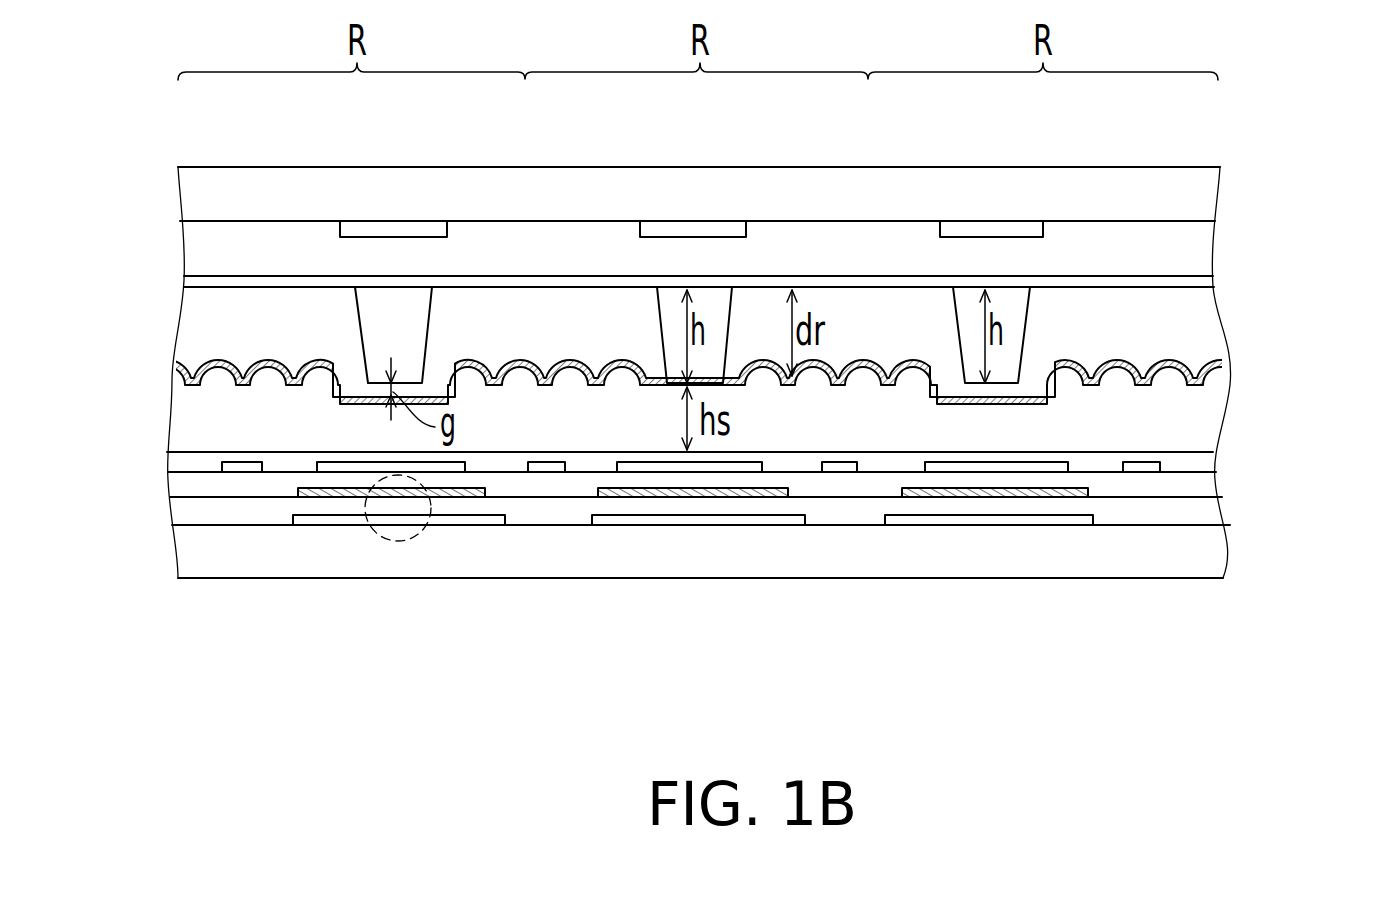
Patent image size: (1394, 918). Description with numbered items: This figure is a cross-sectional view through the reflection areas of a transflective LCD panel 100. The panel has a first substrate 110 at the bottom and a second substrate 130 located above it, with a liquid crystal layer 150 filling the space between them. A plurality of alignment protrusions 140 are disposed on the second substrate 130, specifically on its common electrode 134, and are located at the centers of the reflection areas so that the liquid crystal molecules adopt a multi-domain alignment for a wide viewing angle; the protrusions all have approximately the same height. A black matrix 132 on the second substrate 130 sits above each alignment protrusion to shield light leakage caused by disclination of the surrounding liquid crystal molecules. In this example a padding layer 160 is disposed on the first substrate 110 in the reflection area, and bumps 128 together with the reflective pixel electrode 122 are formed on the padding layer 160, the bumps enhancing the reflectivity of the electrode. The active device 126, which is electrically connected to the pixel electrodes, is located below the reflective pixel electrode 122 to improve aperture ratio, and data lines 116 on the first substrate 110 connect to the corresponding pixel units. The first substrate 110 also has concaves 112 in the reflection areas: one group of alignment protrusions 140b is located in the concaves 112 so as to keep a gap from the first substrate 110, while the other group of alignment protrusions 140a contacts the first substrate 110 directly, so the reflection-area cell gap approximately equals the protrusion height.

The LCD panel 100 is at (1279, 740).
The first substrate 110 is at (1166, 600).
The concaves 112 is at (434, 379).
The data lines 116 is at (552, 474).
The reflective pixel electrode 122 is at (593, 388).
The active device 126 is at (400, 542).
The bumps 128 is at (520, 390).
The second substrate 130 is at (1218, 137).
The black matrix 132 is at (390, 230).
The common electrode 134 is at (1212, 282).
The alignment protrusions 140 is at (917, 655).
The alignment protrusions 140a is at (728, 338).
The alignment protrusions 140b is at (940, 332).
The liquid crystal layer 150 is at (1208, 330).
The padding layer 160 is at (1205, 425).